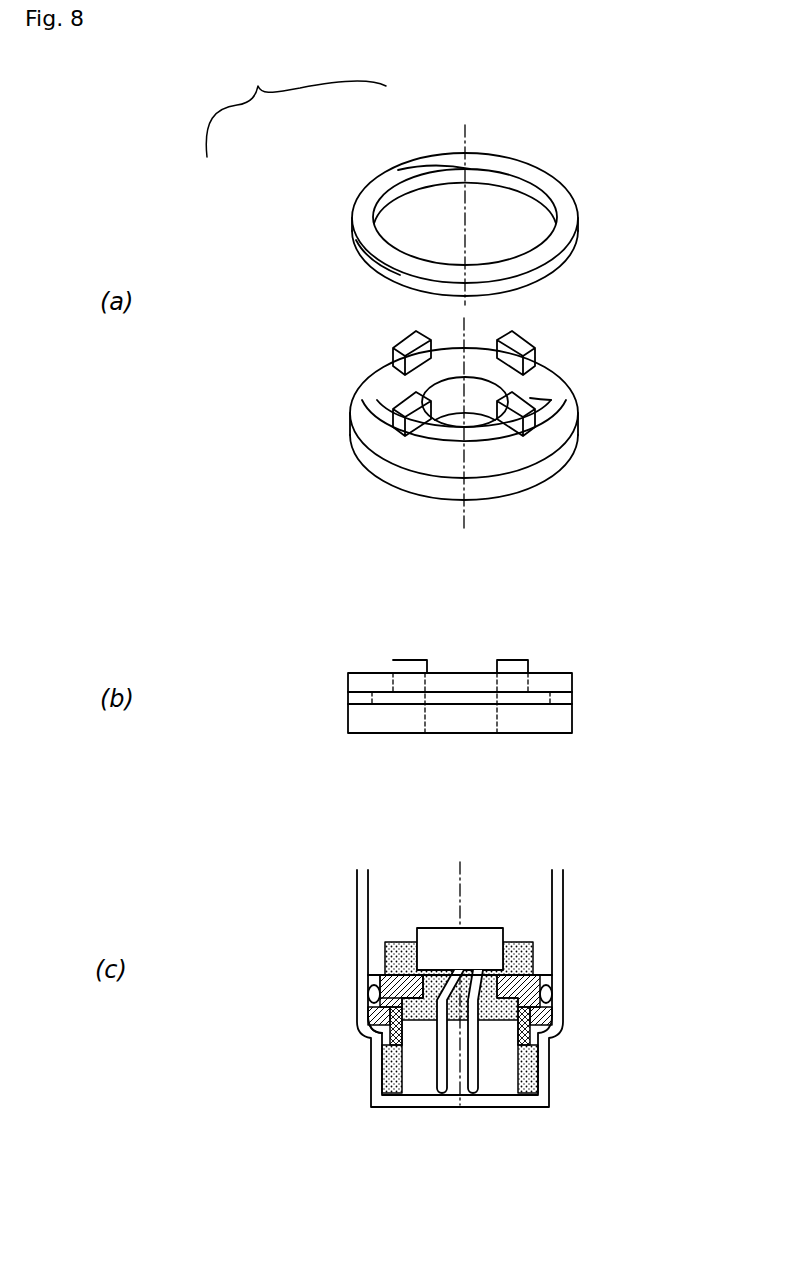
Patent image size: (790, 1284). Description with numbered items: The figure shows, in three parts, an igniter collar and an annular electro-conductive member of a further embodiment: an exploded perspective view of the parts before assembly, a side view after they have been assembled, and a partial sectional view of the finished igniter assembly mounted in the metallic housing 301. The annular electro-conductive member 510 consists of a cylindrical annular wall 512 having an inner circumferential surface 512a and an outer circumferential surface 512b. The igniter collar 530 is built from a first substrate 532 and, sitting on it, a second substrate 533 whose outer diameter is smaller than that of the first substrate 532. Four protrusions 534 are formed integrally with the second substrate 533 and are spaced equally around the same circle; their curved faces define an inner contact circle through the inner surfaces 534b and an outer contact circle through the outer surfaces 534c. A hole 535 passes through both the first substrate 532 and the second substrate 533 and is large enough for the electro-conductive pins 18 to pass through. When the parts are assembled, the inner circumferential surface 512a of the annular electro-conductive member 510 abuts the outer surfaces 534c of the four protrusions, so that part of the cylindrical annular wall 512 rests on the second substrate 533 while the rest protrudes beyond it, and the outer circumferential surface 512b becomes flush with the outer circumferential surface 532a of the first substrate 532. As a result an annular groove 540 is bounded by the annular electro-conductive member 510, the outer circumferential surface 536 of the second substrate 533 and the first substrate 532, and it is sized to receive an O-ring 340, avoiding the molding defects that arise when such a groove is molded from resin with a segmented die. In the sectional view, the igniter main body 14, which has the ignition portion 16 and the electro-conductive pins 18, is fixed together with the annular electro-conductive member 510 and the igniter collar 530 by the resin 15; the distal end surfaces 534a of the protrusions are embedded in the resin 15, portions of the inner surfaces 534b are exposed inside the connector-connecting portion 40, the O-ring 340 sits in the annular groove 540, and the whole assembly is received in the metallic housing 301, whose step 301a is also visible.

The annular electro-conductive member 510 is at (569, 184).
The cylindrical annular wall 512 is at (296, 101).
The inner circumferential surface 512a is at (398, 193).
The outer circumferential surface 512b is at (372, 258).
The igniter collar 530 is at (495, 435).
The first substrate 532 is at (572, 432).
The outer circumferential surface 532a is at (533, 475).
The second substrate 533 is at (543, 397).
The protrusions 534 is at (410, 660).
The distal end surfaces 534a is at (515, 362).
The inner surfaces 534b is at (535, 393).
The outer surfaces 534c is at (398, 413).
The hole 535 is at (477, 392).
The outer circumferential surface 536 is at (483, 458).
The annular groove 540 is at (357, 698).
The igniter main body 14 is at (453, 995).
The resin 15 is at (398, 942).
The ignition portion 16 is at (457, 962).
The electro-conductive pins 18 is at (440, 1093).
The connector-connecting portion 40 is at (433, 1076).
The metallic housing 301 is at (553, 915).
The step portion of housing 301a is at (376, 1022).
The O-ring 340 is at (553, 995).